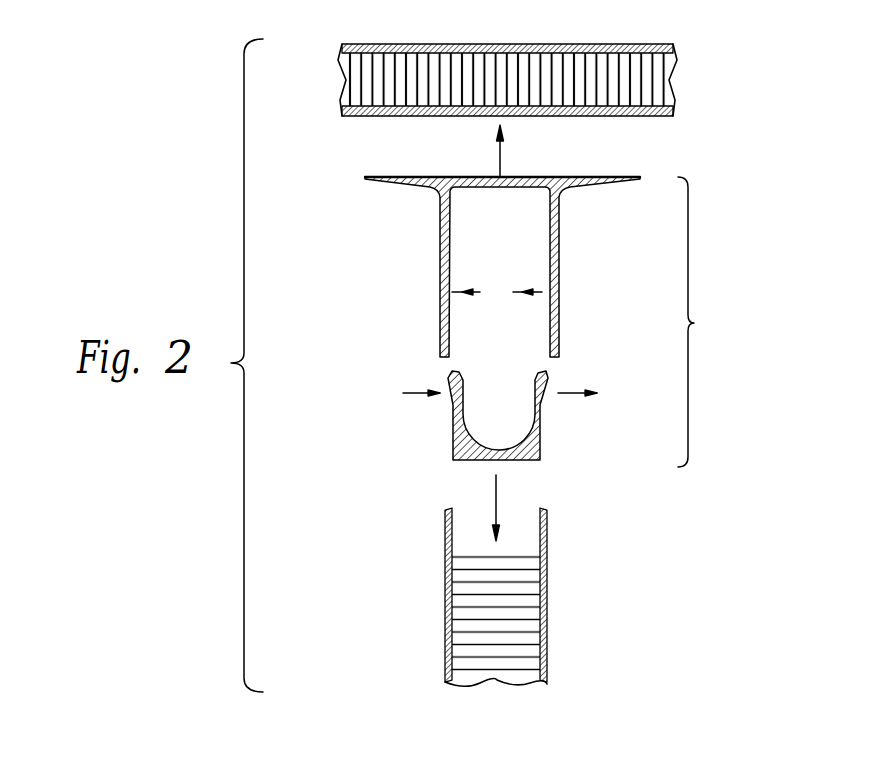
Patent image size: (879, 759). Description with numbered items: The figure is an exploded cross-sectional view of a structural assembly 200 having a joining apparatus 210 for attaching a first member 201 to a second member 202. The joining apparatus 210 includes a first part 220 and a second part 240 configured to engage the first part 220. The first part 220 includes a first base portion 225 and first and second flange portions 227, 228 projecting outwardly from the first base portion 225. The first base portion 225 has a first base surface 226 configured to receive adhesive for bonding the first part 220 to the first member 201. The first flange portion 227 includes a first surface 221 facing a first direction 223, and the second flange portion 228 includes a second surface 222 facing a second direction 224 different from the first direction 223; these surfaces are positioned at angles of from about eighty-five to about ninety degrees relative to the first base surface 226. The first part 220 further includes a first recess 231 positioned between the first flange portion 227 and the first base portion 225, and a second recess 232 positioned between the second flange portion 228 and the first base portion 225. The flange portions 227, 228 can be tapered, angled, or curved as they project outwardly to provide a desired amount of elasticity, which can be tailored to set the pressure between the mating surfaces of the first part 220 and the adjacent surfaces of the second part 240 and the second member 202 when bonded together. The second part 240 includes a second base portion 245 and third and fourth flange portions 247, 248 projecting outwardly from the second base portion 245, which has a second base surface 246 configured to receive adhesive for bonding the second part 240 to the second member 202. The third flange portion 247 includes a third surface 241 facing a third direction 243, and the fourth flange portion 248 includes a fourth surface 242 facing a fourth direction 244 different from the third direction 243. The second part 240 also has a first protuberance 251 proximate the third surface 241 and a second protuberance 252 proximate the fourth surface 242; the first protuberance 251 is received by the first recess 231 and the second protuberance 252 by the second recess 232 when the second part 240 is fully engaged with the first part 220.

The first member 201 is at (597, 43).
The second recess 232 is at (457, 176).
The first base portion 225 is at (478, 176).
The first recess 231 is at (545, 176).
The first base surface 226 is at (406, 177).
The first part 220 is at (440, 228).
The first direction 223 is at (535, 290).
The second direction 224 is at (463, 290).
The first flange portion 227 is at (559, 312).
The second surface 222 is at (450, 322).
The second flange portion 228 is at (441, 348).
The first surface 221 is at (550, 335).
The first protuberance 251 is at (548, 373).
The second protuberance 252 is at (451, 373).
The third flange portion 247 is at (536, 400).
The fourth flange portion 248 is at (465, 400).
The fourth direction 244 is at (403, 393).
The third direction 243 is at (568, 394).
The second part 240 is at (450, 408).
The fourth surface 242 is at (452, 428).
The third surface 241 is at (544, 413).
The second base portion 245 is at (507, 465).
The second base surface 246 is at (476, 466).
The second member 202 is at (547, 620).
The joining apparatus 210 is at (690, 322).
The structural assembly 200 is at (319, 481).